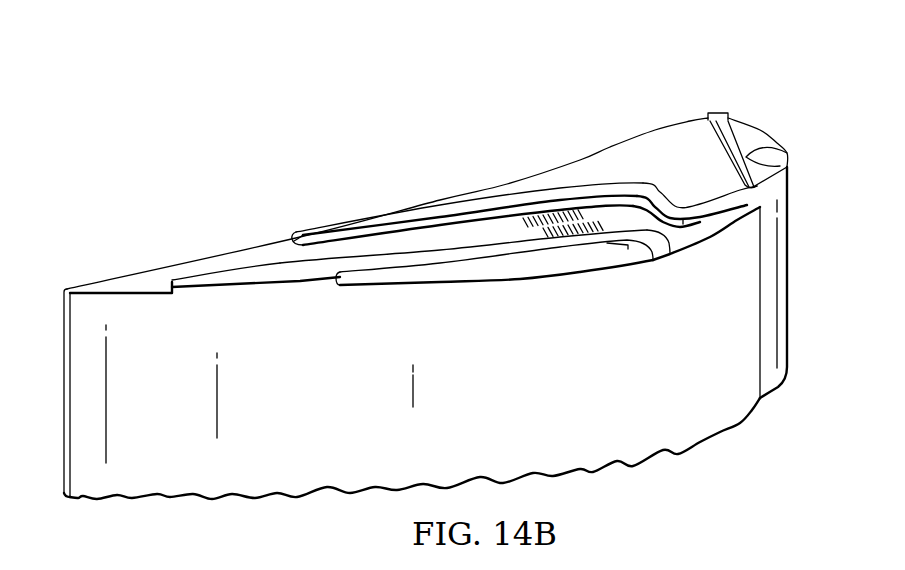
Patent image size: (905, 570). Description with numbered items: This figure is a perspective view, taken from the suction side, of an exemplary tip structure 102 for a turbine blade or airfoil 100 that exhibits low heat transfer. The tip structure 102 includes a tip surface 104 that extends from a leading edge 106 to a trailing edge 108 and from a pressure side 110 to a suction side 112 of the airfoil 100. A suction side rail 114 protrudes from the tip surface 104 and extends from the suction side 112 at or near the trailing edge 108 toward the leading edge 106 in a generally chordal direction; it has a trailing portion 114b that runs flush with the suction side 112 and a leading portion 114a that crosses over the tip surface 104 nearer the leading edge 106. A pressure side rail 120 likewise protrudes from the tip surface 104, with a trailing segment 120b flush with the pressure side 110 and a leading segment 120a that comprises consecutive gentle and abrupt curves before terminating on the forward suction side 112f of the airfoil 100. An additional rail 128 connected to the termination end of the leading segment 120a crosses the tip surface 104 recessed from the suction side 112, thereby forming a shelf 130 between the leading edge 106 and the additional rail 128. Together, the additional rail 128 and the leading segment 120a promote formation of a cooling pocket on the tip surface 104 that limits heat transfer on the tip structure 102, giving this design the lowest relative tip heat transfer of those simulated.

The airfoil 100 is at (350, 124).
The tip structure 102 is at (437, 263).
The tip surface 104 is at (423, 240).
The leading edge 106 is at (738, 80).
The trailing edge 108 is at (58, 266).
The pressure side 110 is at (567, 160).
The suction side 112 is at (427, 286).
The forward suction side 112f is at (705, 247).
The suction side rail 114 is at (526, 276).
The leading portion 114a is at (613, 248).
The trailing portion 114b is at (210, 270).
The pressure side rail 120 is at (497, 186).
The leading segment 120a is at (648, 177).
The trailing segment 120b is at (327, 225).
The additional rail 128 is at (787, 153).
The shelf 130 is at (758, 135).